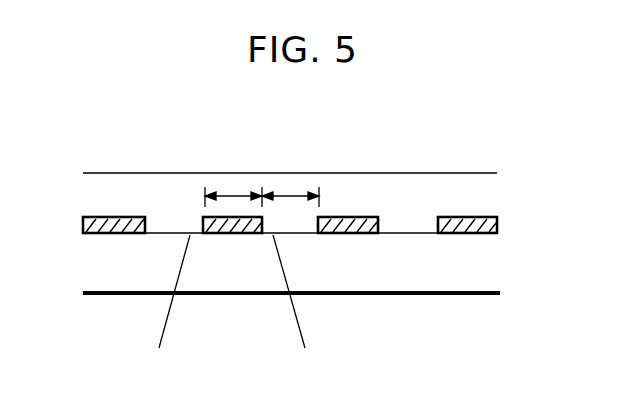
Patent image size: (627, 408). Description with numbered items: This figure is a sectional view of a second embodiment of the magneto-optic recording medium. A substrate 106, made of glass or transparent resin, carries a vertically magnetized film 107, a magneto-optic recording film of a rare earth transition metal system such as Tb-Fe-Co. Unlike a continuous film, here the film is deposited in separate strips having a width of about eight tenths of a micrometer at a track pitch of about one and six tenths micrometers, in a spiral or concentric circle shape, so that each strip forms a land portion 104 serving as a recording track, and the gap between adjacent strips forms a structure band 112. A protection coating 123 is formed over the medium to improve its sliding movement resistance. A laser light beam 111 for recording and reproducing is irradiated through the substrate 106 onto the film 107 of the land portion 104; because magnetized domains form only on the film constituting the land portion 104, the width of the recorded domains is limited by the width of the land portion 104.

The land portion 104 is at (237, 192).
The structure band 112 is at (293, 192).
The protection coating 123 is at (457, 193).
The vertically magnetized film 107 is at (497, 222).
The substrate 106 is at (467, 267).
The laser light beam 111 is at (232, 294).